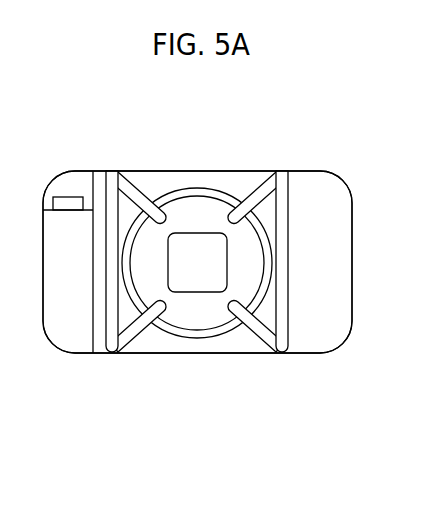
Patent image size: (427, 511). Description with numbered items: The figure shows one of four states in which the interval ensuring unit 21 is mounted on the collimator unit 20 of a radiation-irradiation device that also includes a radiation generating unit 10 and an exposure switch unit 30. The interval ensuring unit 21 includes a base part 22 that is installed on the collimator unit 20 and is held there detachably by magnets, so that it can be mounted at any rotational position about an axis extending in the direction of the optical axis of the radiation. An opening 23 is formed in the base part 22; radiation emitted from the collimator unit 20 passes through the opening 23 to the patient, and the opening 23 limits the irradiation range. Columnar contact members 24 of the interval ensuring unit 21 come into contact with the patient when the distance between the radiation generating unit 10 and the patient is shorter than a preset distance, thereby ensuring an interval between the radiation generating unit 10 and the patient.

The radiation generating unit 10 is at (257, 170).
The collimator unit 20 is at (164, 327).
The interval ensuring unit 21 is at (297, 213).
The base part 22 is at (197, 318).
The opening 23 is at (182, 233).
The contact members 24 is at (113, 180).
The exposure switch unit 30 is at (68, 340).